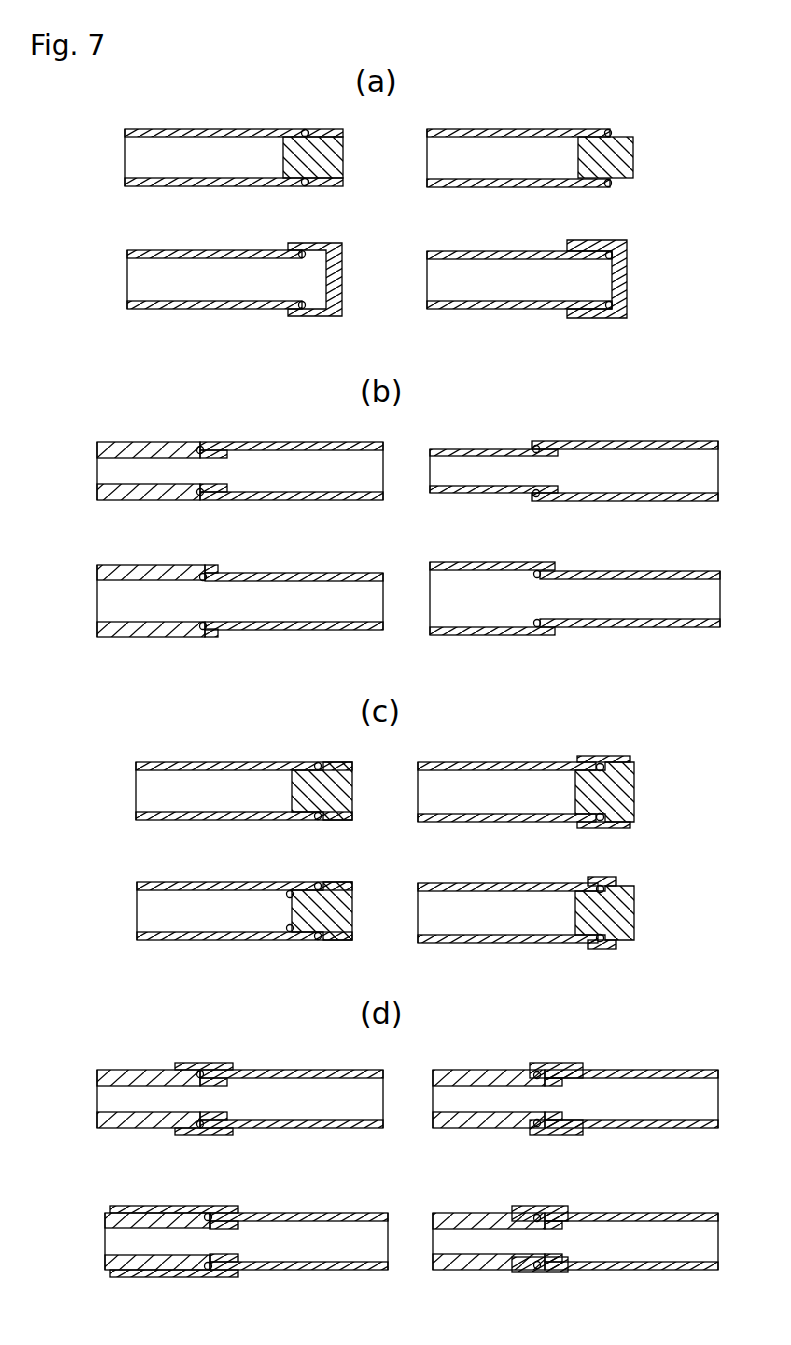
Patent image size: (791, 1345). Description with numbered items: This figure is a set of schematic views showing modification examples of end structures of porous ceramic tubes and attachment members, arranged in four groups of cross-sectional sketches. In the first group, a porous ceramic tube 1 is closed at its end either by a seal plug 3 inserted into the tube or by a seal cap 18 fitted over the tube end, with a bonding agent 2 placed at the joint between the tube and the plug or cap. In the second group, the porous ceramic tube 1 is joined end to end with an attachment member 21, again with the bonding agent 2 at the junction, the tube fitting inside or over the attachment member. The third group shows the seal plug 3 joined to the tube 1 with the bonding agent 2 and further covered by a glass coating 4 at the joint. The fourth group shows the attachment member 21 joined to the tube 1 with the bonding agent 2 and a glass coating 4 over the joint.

The porous ceramic tube 1 is at (190, 128).
The bonding agent 2 is at (305, 130).
The seal plug 3 is at (335, 153).
The glass coating 4 is at (620, 757).
The seal cap 18 is at (340, 275).
The attachment member 21 is at (148, 445).